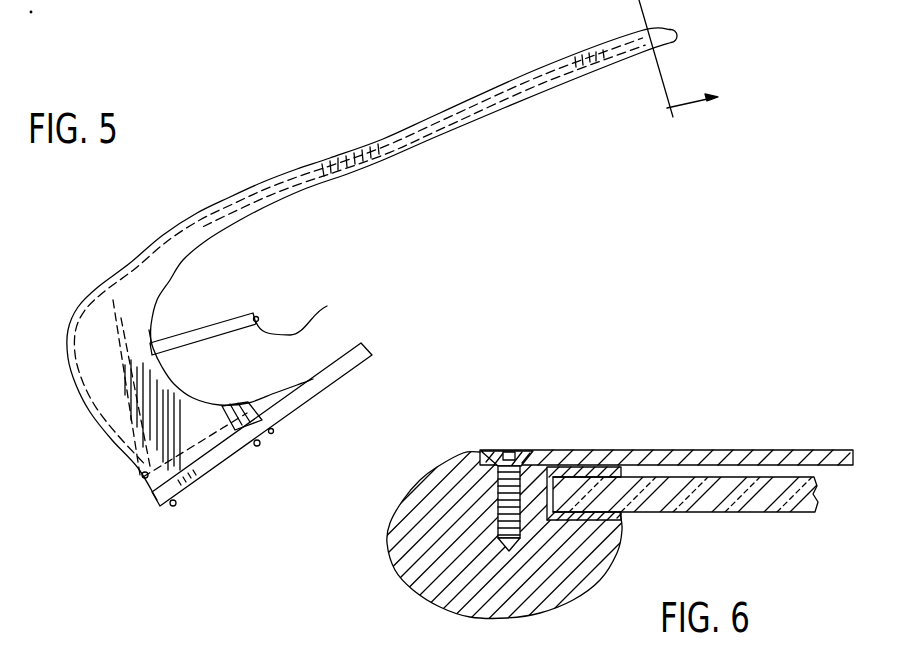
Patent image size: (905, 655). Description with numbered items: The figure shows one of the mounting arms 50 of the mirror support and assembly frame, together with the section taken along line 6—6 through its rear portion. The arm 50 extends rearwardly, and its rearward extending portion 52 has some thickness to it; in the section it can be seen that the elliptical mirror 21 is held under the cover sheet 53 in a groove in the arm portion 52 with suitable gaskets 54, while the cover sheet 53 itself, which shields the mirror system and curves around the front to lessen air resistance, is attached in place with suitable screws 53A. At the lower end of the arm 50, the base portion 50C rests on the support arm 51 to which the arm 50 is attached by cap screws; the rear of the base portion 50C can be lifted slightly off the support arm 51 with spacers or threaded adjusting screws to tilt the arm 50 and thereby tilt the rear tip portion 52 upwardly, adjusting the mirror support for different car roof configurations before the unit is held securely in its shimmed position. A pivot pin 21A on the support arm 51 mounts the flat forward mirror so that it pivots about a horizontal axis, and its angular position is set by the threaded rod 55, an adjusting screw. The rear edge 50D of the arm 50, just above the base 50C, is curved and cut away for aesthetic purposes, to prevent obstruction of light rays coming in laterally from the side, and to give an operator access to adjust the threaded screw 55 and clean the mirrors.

In FIG. 5, the elliptical mirror 21 is at (416, 117).
In FIG. 6, the elliptical mirror 21 is at (733, 498).
In FIG. 5, the pivot pin 21A is at (140, 474).
In FIG. 5, the arm 50 is at (180, 404).
In FIG. 5, the base portion 50C is at (251, 407).
In FIG. 5, the rear edge 50D is at (151, 338).
In FIG. 5, the support arm 51 is at (363, 340).
In FIG. 5, the rearward extending portion 52 is at (517, 95).
In FIG. 6, the rearward extending portion 52 is at (413, 568).
In FIG. 5, the cover sheet 53 is at (331, 155).
In FIG. 6, the cover sheet 53 is at (620, 451).
In FIG. 6, the screws 53A is at (497, 462).
In FIG. 6, the gaskets 54 is at (614, 514).
In FIG. 5, the threaded rod 55 is at (306, 315).
In FIG. 5, the section line 6 is at (687, 58).